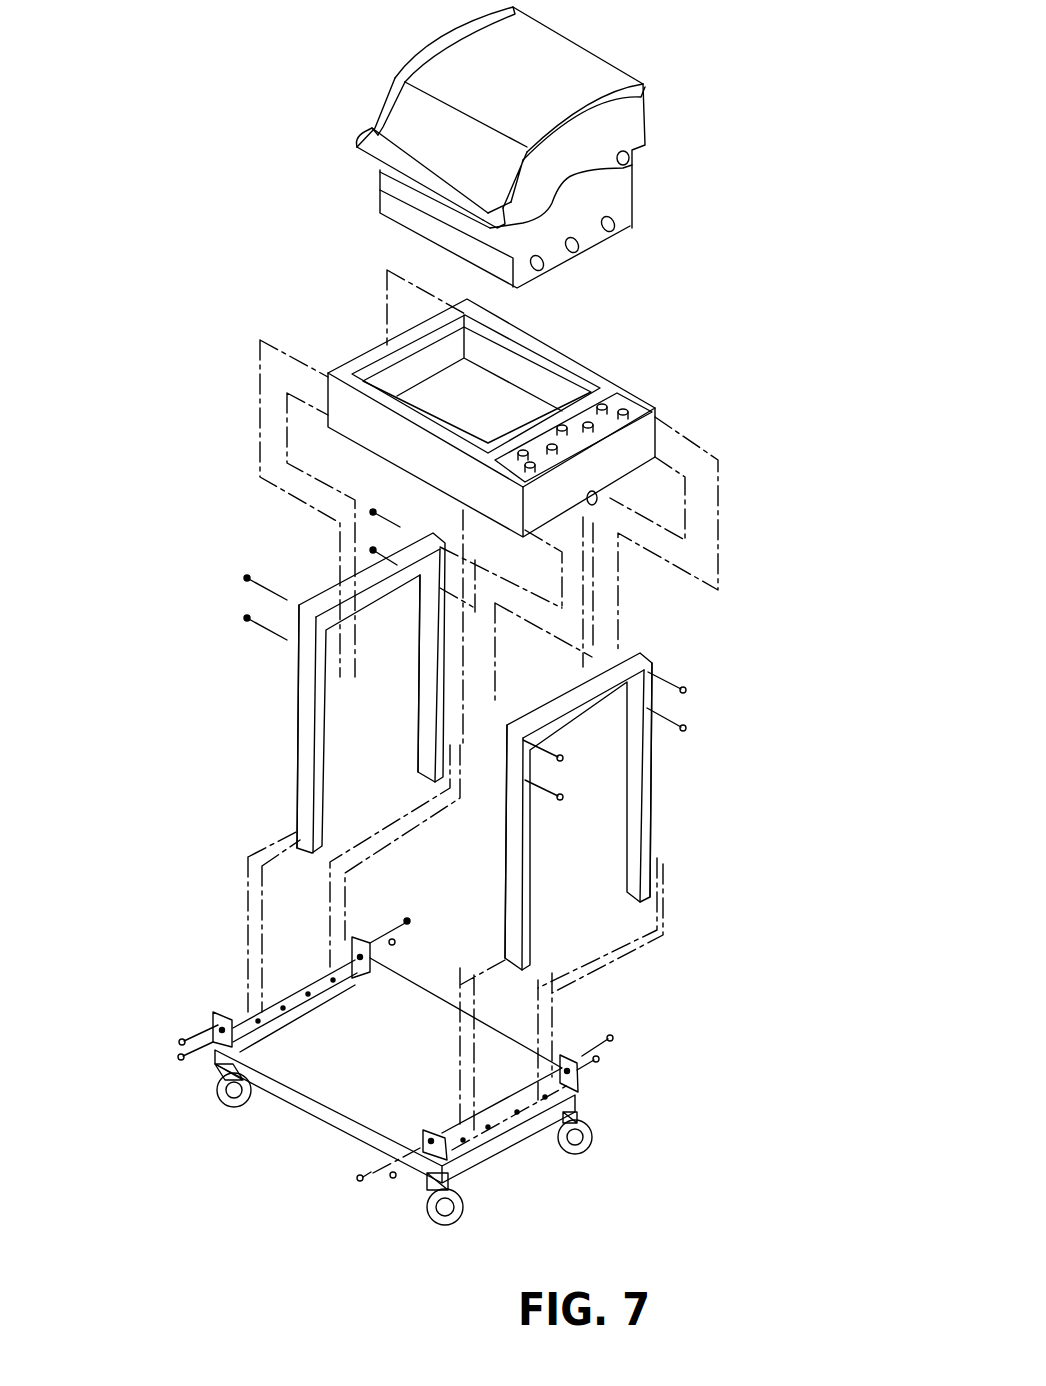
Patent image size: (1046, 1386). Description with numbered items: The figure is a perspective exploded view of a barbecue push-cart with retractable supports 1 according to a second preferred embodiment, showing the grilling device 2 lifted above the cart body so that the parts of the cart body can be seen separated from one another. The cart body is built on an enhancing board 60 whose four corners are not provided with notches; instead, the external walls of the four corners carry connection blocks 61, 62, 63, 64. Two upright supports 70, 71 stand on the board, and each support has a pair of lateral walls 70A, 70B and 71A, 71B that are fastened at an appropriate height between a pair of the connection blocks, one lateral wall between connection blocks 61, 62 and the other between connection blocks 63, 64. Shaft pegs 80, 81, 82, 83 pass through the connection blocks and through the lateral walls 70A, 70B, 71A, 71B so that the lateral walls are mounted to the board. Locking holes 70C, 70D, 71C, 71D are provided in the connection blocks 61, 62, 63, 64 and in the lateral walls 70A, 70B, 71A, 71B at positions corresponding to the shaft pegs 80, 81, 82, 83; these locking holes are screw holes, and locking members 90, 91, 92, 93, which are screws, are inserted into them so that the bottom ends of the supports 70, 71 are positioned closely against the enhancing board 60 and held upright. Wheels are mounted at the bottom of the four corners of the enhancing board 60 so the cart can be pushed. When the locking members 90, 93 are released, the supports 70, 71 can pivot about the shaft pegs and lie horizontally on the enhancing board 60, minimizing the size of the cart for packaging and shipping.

The barbecue push-cart with retractable supports 1 is at (761, 994).
The grilling device 2 is at (657, 75).
The enhancing board 60 is at (425, 1081).
The connection block 61 is at (578, 1078).
The connection block 62 is at (423, 1135).
The connection block 63 is at (370, 958).
The connection block 64 is at (213, 1020).
The support 70 is at (625, 922).
The lateral wall 70A is at (662, 840).
The lateral wall 70B is at (505, 960).
The locking hole 70C is at (586, 1077).
The locking hole 70D is at (543, 970).
The support 71 is at (293, 760).
The lateral wall 71A is at (449, 762).
The lateral wall 71B is at (302, 828).
The locking hole 71C is at (357, 933).
The locking hole 71D is at (295, 830).
The shaft peg 80 is at (612, 1038).
The shaft peg 81 is at (358, 1180).
The shaft peg 82 is at (395, 944).
The shaft peg 83 is at (180, 1058).
The locking member 90 is at (598, 1061).
The locking member 91 is at (393, 1178).
The locking member 92 is at (407, 919).
The locking member 93 is at (180, 1042).